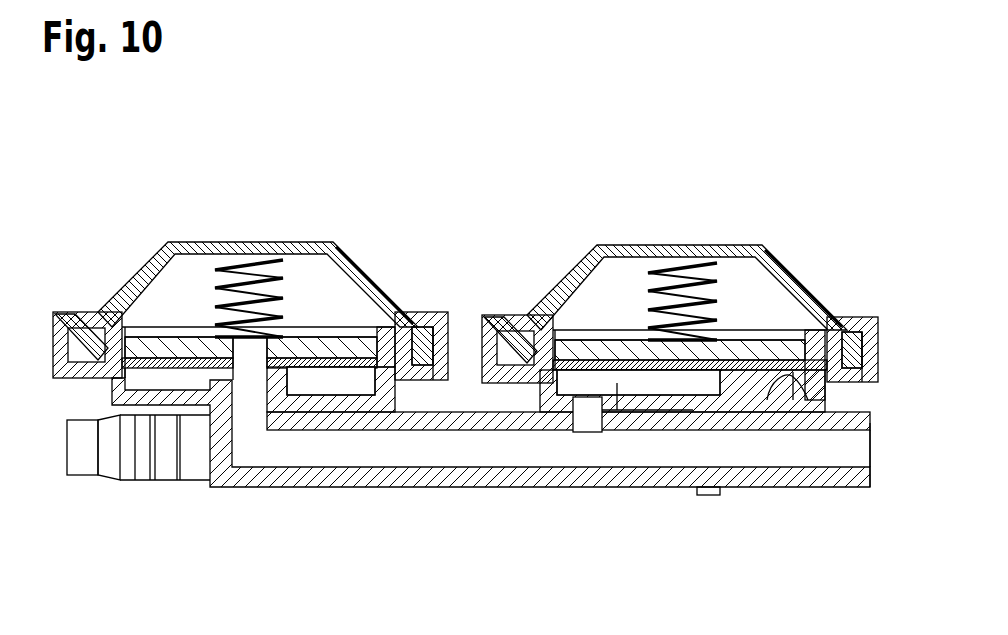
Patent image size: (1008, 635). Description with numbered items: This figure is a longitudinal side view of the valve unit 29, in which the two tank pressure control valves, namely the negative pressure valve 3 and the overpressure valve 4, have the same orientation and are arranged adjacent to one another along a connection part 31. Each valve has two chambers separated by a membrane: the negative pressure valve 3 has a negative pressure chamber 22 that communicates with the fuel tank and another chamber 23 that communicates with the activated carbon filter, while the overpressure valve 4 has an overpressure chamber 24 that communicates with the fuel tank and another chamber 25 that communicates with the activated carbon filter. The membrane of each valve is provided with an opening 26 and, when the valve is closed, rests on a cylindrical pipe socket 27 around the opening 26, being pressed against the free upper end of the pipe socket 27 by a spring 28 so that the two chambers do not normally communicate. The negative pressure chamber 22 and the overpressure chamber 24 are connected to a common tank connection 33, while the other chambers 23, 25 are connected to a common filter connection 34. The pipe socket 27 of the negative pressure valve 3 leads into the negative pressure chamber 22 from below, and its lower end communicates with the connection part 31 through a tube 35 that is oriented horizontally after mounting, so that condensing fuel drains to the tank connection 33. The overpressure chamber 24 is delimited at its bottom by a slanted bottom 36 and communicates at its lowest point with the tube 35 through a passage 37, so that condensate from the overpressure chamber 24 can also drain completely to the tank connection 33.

The negative pressure valve 3 is at (358, 235).
The overpressure valve 4 is at (790, 243).
The negative pressure chamber 22 is at (170, 300).
The other chamber 23 is at (333, 380).
The overpressure chamber 24 is at (617, 385).
The other chamber 25 is at (600, 292).
The opening 26 is at (258, 362).
The pipe socket 27 is at (220, 375).
The spring 28 is at (237, 300).
The valve unit 29 is at (385, 264).
The connection part 31 is at (458, 502).
The tank connection 33 is at (853, 480).
The filter connection 34 is at (137, 450).
The tube 35 is at (387, 460).
The slanted bottom 36 is at (791, 380).
The passage 37 is at (587, 420).